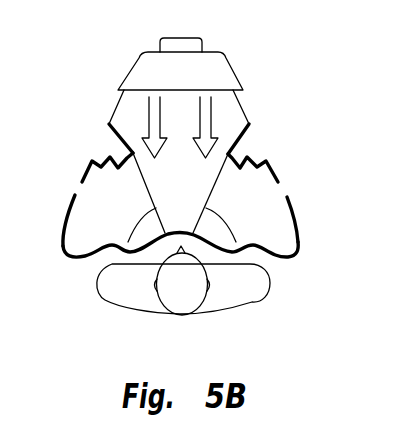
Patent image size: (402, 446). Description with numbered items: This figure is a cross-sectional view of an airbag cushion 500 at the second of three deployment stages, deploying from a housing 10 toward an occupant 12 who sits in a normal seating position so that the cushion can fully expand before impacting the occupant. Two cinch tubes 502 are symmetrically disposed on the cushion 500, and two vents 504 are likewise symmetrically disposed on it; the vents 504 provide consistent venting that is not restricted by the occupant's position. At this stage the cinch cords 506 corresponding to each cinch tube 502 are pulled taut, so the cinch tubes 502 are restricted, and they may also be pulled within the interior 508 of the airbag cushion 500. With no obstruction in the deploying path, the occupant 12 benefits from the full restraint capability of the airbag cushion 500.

The housing 10 is at (193, 82).
The occupant 12 is at (193, 296).
The airbag cushion 500 is at (65, 252).
The cinch tubes 502 is at (102, 147).
The vents 504 is at (72, 185).
The cinch cords 506 is at (128, 242).
The interior 508 is at (118, 226).